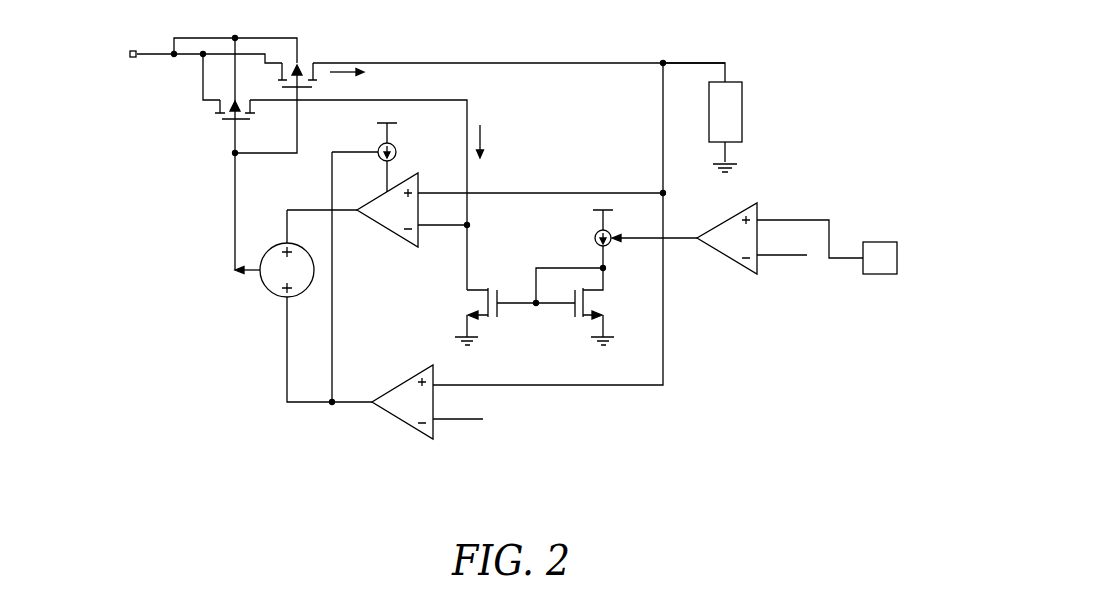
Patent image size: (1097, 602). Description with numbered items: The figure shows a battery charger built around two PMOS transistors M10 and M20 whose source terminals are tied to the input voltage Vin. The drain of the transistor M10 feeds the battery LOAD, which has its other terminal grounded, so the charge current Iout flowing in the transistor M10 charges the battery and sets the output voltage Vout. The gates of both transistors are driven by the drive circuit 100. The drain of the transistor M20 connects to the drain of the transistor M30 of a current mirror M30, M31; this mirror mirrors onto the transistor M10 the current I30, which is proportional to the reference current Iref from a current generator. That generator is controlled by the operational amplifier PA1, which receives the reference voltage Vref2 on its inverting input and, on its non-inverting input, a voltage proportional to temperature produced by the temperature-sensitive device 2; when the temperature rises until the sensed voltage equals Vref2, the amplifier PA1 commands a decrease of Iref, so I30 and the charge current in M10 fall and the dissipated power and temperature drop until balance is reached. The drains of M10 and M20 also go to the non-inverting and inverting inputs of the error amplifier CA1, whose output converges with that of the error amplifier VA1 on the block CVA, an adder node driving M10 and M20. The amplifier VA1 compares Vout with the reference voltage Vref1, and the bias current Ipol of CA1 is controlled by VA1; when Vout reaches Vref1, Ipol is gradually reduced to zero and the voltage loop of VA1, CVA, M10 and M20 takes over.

The drive circuit 100 is at (188, 221).
The temperature-sensitive device 2 is at (887, 267).
The PMOS transistor M10 is at (323, 59).
The PMOS transistor M20 is at (200, 102).
The current mirror transistor M30 is at (474, 316).
The current mirror transistor M31 is at (598, 306).
The operational error amplifier CA1 is at (367, 218).
The circuit block CVA is at (272, 282).
The operational amplifier PA1 is at (735, 240).
The operational error amplifier VA1 is at (402, 410).
The battery LOAD is at (762, 127).
The bias current Ipol is at (412, 157).
The reference current Iref is at (626, 239).
The mirrored current I30 is at (505, 141).
The output current Iout is at (350, 85).
The input voltage Vin is at (126, 39).
The output voltage Vout is at (691, 44).
The reference voltage Vref1 is at (474, 439).
The reference voltage Vref2 is at (797, 277).